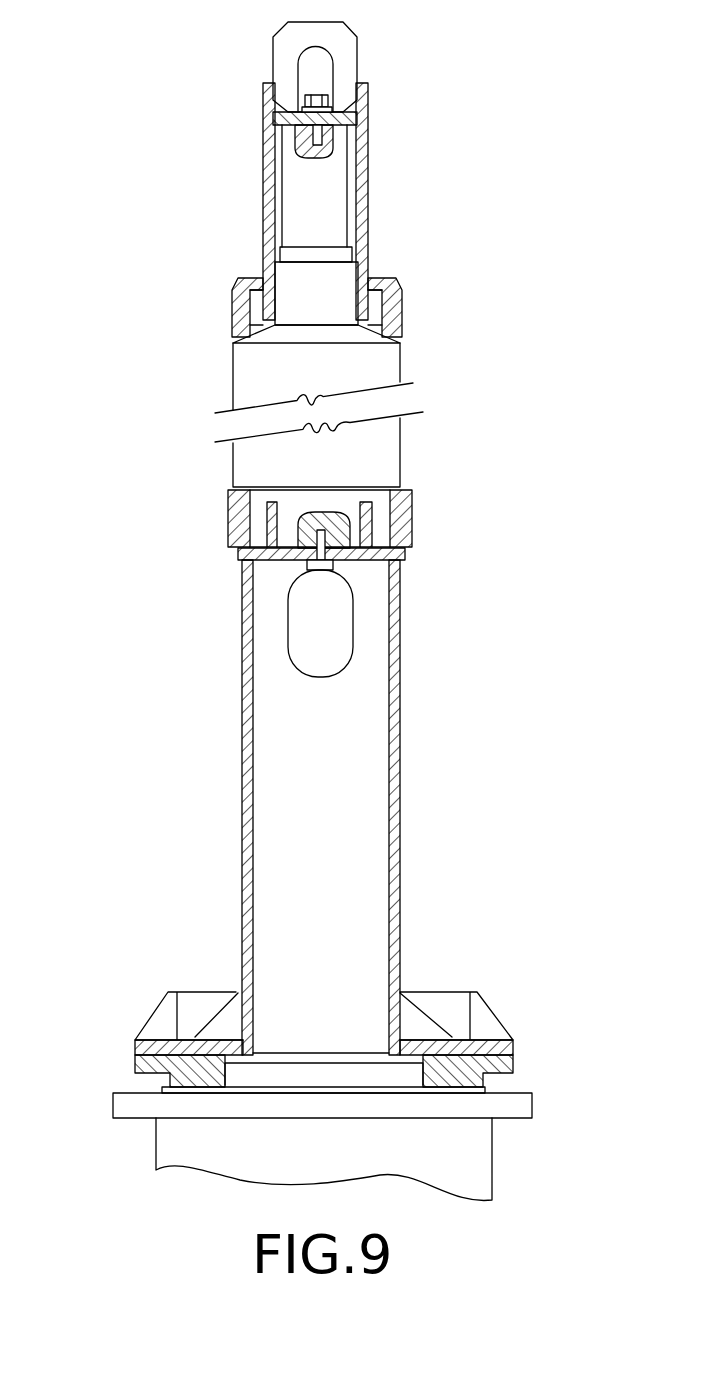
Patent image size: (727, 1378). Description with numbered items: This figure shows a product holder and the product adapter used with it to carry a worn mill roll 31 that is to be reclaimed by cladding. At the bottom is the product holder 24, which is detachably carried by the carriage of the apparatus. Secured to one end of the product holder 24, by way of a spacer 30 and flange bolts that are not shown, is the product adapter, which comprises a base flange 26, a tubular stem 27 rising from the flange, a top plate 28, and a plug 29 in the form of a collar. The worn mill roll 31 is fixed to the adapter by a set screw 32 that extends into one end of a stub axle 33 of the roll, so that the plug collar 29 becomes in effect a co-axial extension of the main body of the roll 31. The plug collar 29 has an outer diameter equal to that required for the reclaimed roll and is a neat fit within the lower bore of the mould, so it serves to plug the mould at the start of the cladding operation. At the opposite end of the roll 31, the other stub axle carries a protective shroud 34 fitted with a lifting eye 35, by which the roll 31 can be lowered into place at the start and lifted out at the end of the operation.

The product holder 24 is at (528, 1083).
The base flange 26 is at (458, 1000).
The tubular stem 27 is at (405, 718).
The top plate 28 is at (393, 548).
The plug 29 is at (230, 503).
The spacer 30 is at (143, 1063).
The worn mill roll 31 is at (382, 435).
The set screw 32 is at (310, 557).
The stub axle 33 is at (347, 500).
The protective shroud 34 is at (380, 204).
The lifting eye 35 is at (343, 40).